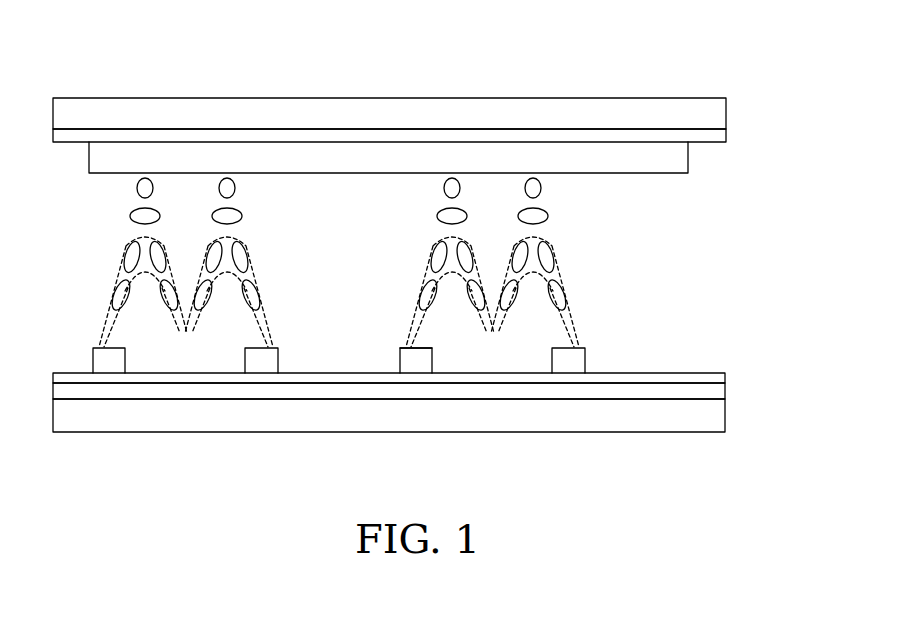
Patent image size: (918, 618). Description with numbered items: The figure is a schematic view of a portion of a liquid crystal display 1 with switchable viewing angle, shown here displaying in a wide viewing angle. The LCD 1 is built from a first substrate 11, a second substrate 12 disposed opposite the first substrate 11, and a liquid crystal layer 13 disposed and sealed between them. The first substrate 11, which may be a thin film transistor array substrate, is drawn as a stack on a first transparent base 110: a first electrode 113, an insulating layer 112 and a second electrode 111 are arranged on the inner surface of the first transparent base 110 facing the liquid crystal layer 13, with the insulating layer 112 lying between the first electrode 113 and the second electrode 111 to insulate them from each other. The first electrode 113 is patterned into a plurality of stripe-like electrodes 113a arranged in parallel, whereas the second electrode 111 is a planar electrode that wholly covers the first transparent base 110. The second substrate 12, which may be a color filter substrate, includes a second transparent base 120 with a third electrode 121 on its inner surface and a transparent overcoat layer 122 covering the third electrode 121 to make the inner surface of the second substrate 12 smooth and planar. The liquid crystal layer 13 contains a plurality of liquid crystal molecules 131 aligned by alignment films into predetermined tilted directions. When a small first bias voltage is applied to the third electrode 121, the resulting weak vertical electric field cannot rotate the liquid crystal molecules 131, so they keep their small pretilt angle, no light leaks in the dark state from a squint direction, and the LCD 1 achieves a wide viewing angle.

The liquid crystal display 1 is at (404, 66).
The first substrate 11 is at (70, 460).
The first transparent base 110 is at (708, 420).
The second electrode 111 is at (708, 392).
The insulating layer 112 is at (695, 380).
The first electrode 113 is at (606, 361).
The stripe-like electrodes 113a is at (416, 361).
The second substrate 12 is at (67, 85).
The second transparent base 120 is at (710, 113).
The third electrode 121 is at (715, 135).
The overcoat layer 122 is at (672, 160).
The liquid crystal layer 13 is at (582, 178).
The liquid crystal molecules 131 is at (143, 214).